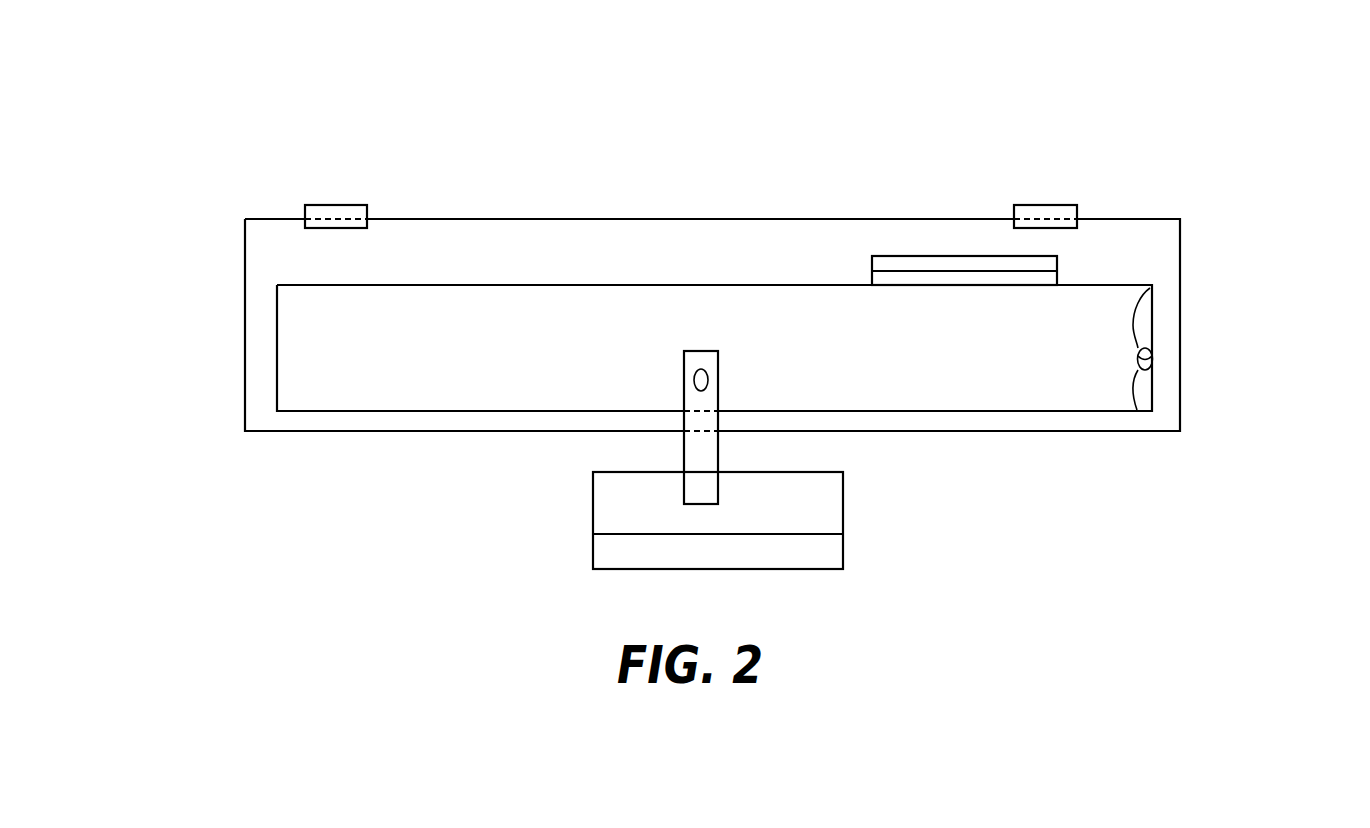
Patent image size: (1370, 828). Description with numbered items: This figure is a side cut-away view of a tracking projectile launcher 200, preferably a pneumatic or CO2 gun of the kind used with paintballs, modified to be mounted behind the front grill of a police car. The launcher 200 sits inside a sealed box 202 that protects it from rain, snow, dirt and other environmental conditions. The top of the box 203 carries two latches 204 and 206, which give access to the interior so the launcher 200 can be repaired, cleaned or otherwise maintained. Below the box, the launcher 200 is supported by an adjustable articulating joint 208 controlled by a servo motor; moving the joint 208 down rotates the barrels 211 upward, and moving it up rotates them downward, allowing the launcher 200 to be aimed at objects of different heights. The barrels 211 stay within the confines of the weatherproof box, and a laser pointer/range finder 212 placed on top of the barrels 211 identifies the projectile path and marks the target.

The launcher 200 is at (1104, 369).
The sealed box 202 is at (233, 333).
The top of the box 203 is at (893, 204).
The latch 204 is at (1062, 205).
The latch 206 is at (334, 208).
The articulating joint 208 is at (698, 380).
The barrels 211 is at (1168, 353).
The laser pointer/range finder 212 is at (1057, 258).